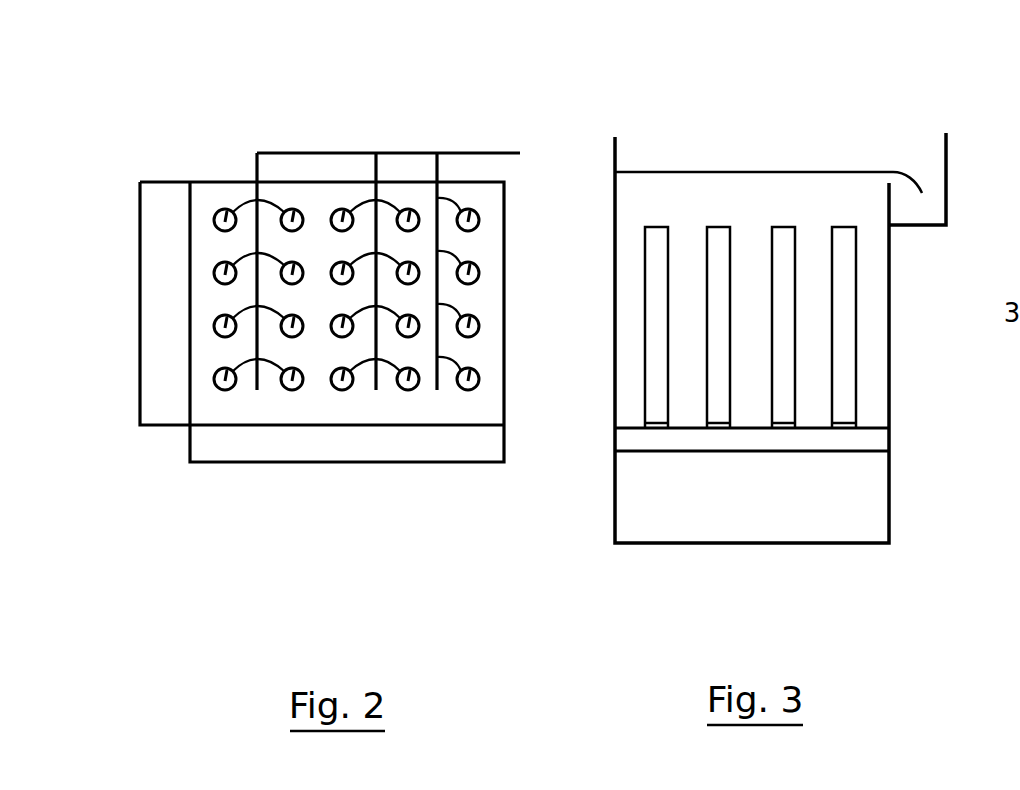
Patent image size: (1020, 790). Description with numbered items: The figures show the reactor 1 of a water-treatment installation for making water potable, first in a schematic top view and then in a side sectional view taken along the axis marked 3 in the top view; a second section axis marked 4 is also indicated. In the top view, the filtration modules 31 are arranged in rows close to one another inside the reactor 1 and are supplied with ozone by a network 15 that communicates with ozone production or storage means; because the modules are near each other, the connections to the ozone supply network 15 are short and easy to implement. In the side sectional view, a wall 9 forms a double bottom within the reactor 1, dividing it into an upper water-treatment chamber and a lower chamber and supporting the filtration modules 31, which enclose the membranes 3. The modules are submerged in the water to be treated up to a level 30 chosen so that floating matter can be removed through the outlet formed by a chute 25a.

In FIG. 2, the reactor 1 is at (505, 345).
In FIG. 3, the reactor 1 is at (892, 382).
In FIG. 2, the ozone supply network 15 is at (395, 152).
In FIG. 2, the filtration modules 31 is at (482, 315).
In FIG. 3, the filtration modules 31 is at (856, 360).
In FIG. 2, the membranes 3 is at (520, 238).
In FIG. 3, the membranes 3 is at (843, 262).
In FIG. 2, the section line 4- 4 is at (203, 482).
In FIG. 3, the level 30 is at (732, 170).
In FIG. 3, the chute 25a is at (950, 165).
In FIG. 3, the wall 9 is at (877, 440).